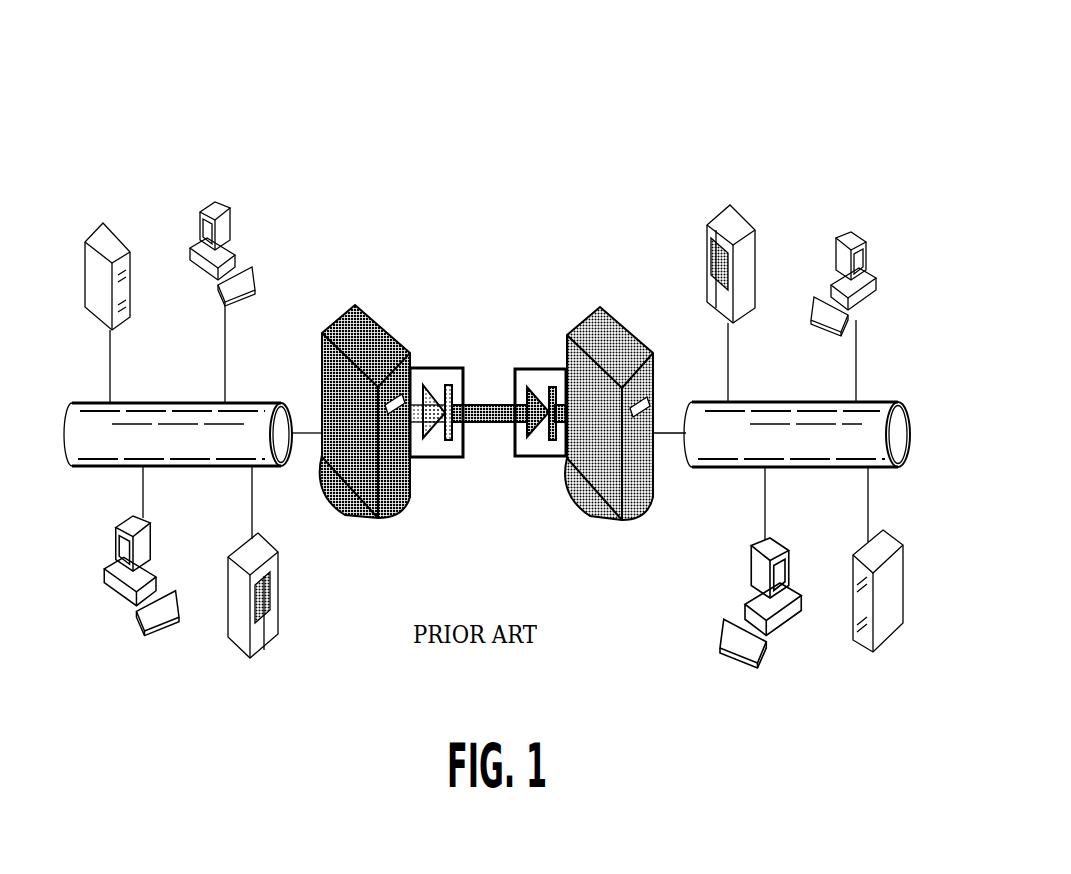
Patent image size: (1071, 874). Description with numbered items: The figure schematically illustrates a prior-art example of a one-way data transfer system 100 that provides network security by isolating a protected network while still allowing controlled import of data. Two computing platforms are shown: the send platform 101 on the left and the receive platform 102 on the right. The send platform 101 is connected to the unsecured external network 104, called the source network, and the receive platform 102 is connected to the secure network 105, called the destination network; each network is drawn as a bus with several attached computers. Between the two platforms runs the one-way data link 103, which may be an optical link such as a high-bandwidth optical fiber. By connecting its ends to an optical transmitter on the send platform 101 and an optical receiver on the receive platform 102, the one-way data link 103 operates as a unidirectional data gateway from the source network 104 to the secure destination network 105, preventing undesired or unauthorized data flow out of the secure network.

The one-way data transfer system 100 is at (499, 125).
The send platform 101 is at (370, 325).
The receive platform 102 is at (595, 316).
The one-way data link 103 is at (492, 422).
The unsecured external network 104 is at (163, 430).
The secure network 105 is at (773, 428).